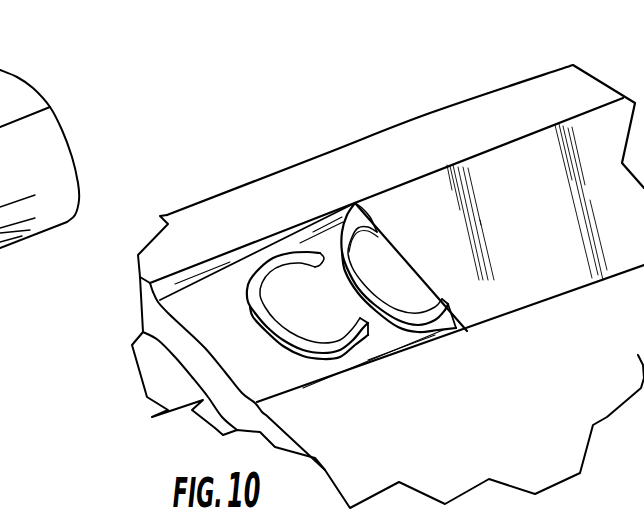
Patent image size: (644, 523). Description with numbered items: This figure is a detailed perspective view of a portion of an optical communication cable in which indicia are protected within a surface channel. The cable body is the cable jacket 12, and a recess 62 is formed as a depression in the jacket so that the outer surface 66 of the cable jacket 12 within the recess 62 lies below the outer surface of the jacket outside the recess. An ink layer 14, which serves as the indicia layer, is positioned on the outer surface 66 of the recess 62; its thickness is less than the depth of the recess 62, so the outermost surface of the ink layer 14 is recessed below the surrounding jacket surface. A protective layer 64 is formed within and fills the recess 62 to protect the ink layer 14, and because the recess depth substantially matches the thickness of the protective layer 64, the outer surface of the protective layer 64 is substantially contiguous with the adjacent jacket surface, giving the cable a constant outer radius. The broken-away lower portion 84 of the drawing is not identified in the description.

The cable jacket 12 is at (180, 247).
The ink layer 14 is at (322, 240).
The recess 62 is at (225, 280).
The protective layer 64 is at (505, 173).
The outer surface 66 is at (225, 320).
The broken-away lower portion 84 is at (334, 521).